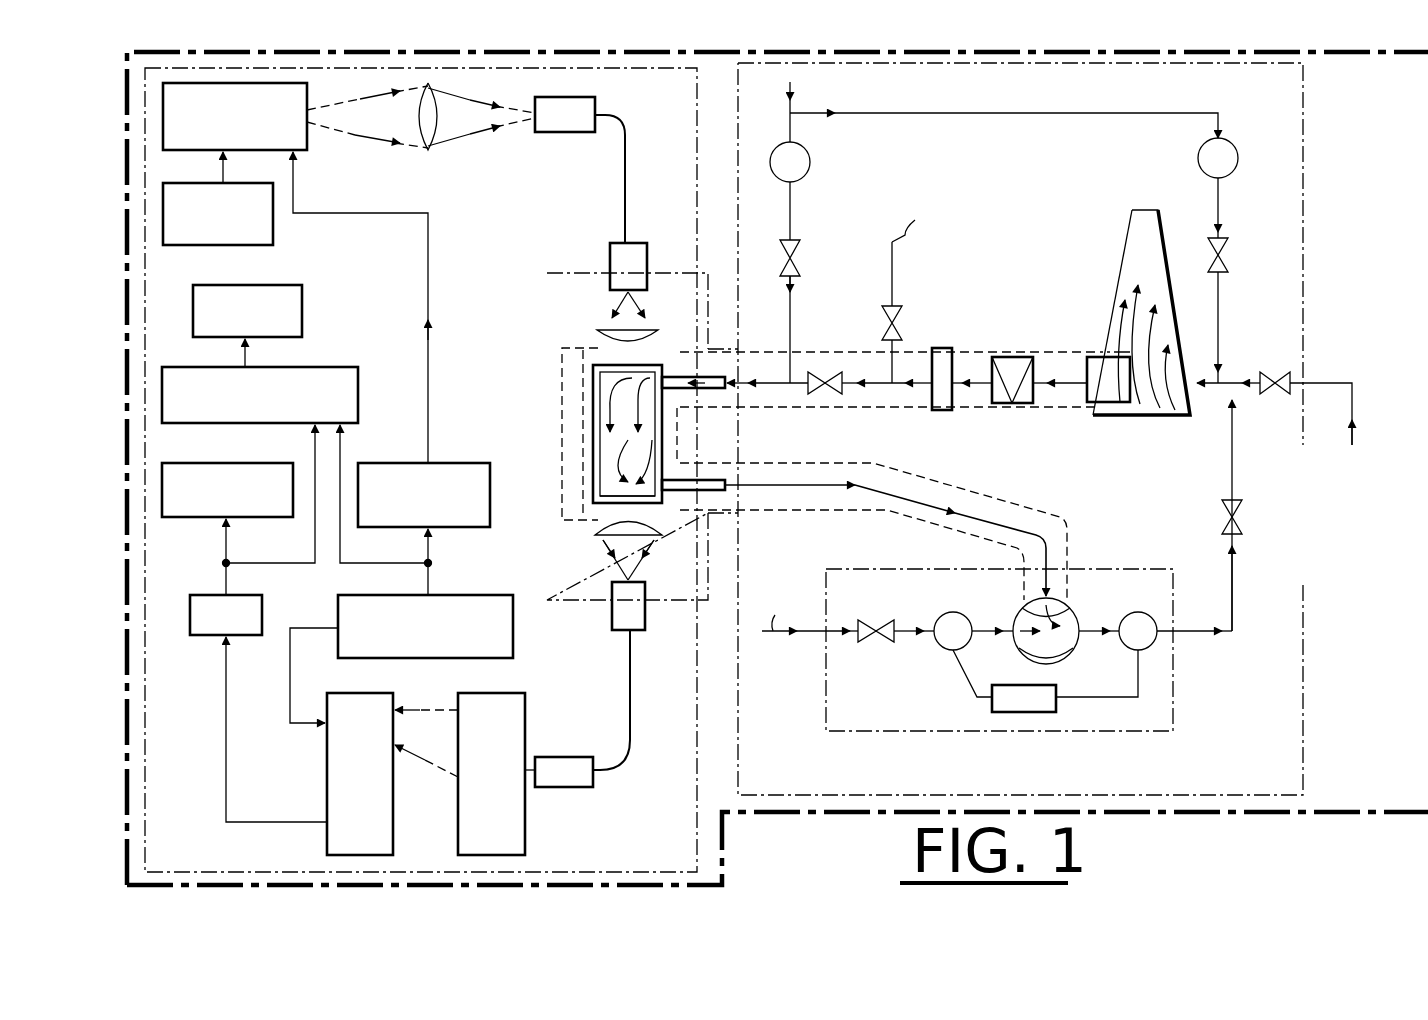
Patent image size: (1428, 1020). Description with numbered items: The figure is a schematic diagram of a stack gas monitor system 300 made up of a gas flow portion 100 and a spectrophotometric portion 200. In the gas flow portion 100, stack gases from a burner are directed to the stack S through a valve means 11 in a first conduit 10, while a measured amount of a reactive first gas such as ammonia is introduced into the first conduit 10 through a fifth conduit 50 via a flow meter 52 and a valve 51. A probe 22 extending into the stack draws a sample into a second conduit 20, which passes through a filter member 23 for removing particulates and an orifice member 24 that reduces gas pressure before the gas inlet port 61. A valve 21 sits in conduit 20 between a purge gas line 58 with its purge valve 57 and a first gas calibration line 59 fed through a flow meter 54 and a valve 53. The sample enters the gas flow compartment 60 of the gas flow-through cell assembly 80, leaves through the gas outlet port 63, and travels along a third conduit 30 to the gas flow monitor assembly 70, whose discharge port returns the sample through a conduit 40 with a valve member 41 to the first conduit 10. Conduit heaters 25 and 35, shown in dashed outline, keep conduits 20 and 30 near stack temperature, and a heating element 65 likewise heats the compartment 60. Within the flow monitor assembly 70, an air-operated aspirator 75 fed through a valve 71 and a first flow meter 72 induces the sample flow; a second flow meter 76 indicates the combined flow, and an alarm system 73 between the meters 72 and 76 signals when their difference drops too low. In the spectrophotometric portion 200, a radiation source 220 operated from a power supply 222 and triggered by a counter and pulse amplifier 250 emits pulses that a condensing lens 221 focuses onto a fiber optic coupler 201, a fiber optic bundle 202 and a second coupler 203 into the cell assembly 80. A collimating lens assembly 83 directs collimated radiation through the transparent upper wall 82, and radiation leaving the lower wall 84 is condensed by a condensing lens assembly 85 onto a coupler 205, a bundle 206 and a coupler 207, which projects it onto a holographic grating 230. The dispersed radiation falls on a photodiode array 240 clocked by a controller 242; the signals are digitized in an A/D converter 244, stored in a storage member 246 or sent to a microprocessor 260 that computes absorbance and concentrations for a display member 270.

The first conduit 10 is at (1210, 390).
The valve means 11 is at (1275, 394).
The second conduit 20 is at (1062, 392).
The valve 21 is at (825, 372).
The probe 22 is at (1100, 357).
The filter member 23 is at (1012, 357).
The orifice member 24 is at (942, 348).
The conduit heater 25 is at (900, 408).
The third gas flow conduit 30 is at (880, 480).
The conduit heater 35 is at (995, 505).
The conduit 40 is at (1232, 490).
The valve member 41 is at (1222, 520).
The fifth conduit 50 is at (1218, 300).
The valve 51 is at (1228, 255).
The flow meter 52 is at (1198, 158).
The valve 53 is at (800, 258).
The flow meter 54 is at (810, 160).
The purge valve 57 is at (896, 330).
The purge gas line 58 is at (892, 282).
The first gas calibration line 59 is at (818, 95).
The gas flow compartment 60 is at (600, 430).
The gas inlet port 61 is at (725, 392).
The gas outlet port 63 is at (740, 483).
The heating element 65 is at (593, 395).
The gas flow monitor assembly 70 is at (864, 733).
The valve 71 is at (880, 642).
The first flow meter 72 is at (938, 645).
The alarm system 73 is at (1030, 712).
The air-operated aspirator 75 is at (1060, 658).
The second flow meter 76 is at (1157, 640).
The gas flow-through cell assembly 80 is at (547, 283).
The upper wall 82 is at (583, 348).
The collimating lens assembly 83 is at (600, 330).
The lower wall 84 is at (600, 490).
The condensing lens assembly 85 is at (600, 545).
The gas flow portion 100 is at (562, 350).
The spectrophotometric portion 200 is at (700, 790).
The fiber optic coupler 201 is at (560, 132).
The fiber optic bundle 202 is at (632, 128).
The second fiber optic coupler 203 is at (610, 250).
The fiber optic coupler 205 is at (612, 612).
The fiber optic bundle 206 is at (630, 687).
The fiber optic coupler 207 is at (586, 715).
The radiation source 220 is at (310, 137).
The condensing lens 221 is at (428, 152).
The power supply 222 is at (273, 228).
The holographic grating 230 is at (535, 790).
The photodiode array 240 is at (327, 770).
The controller 242 is at (498, 595).
The A/D converter 244 is at (190, 638).
The storage member 246 is at (195, 518).
The counter and pulse amplifier 250 is at (395, 463).
The microprocessor 260 is at (318, 367).
The display member 270 is at (302, 308).
The stack gas monitor system 300 is at (1232, 815).